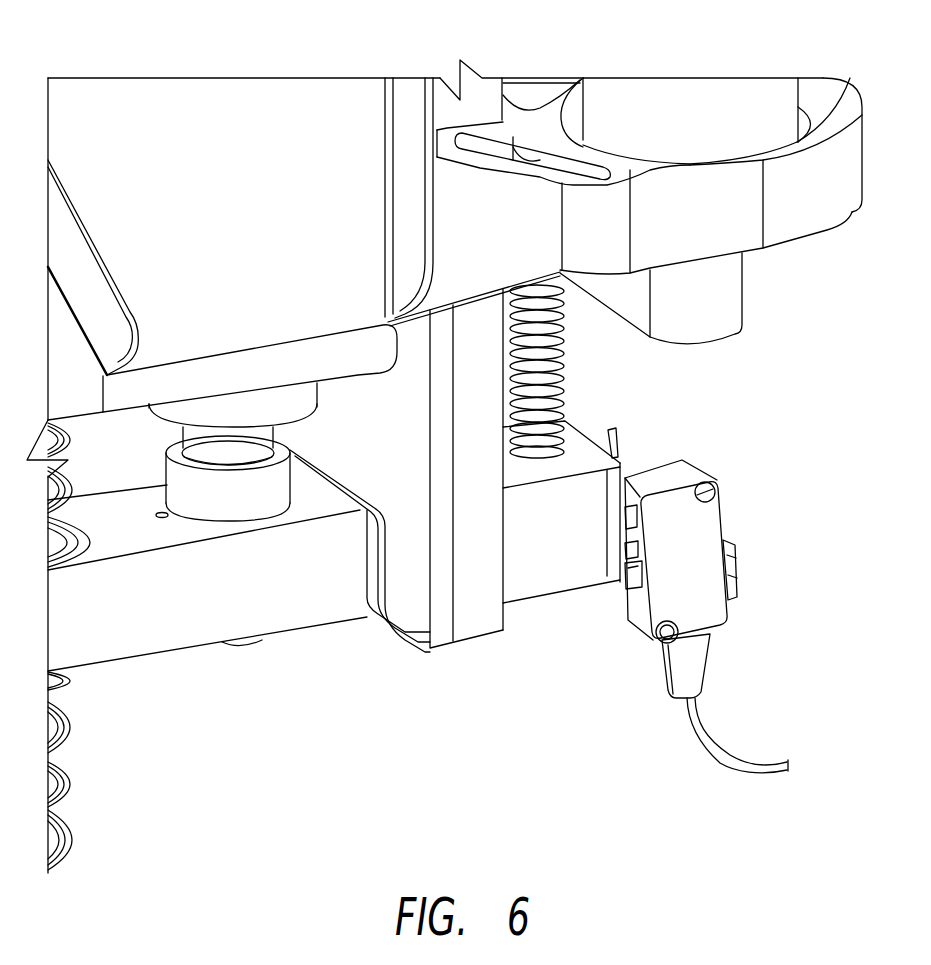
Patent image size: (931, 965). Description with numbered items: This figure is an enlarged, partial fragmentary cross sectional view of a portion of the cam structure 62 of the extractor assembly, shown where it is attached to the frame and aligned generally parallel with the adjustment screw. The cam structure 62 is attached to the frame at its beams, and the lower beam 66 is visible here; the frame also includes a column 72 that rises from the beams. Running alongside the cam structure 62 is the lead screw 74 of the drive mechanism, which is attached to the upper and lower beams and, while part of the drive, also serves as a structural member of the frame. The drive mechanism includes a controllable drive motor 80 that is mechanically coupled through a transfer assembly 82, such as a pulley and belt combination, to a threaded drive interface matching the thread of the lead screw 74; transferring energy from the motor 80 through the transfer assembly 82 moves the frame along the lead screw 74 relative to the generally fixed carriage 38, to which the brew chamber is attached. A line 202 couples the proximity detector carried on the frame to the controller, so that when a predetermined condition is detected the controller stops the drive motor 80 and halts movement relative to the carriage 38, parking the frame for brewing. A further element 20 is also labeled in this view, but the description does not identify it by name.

The switch 20 is at (705, 527).
The carriage 38 is at (823, 210).
The cam structure 62 is at (477, 583).
The lower beam 66 is at (163, 627).
The column 72 is at (238, 443).
The lead screw 74 is at (550, 365).
The drive motor 80 is at (780, 108).
The transfer assembly 82 is at (703, 318).
The line 202 is at (722, 760).